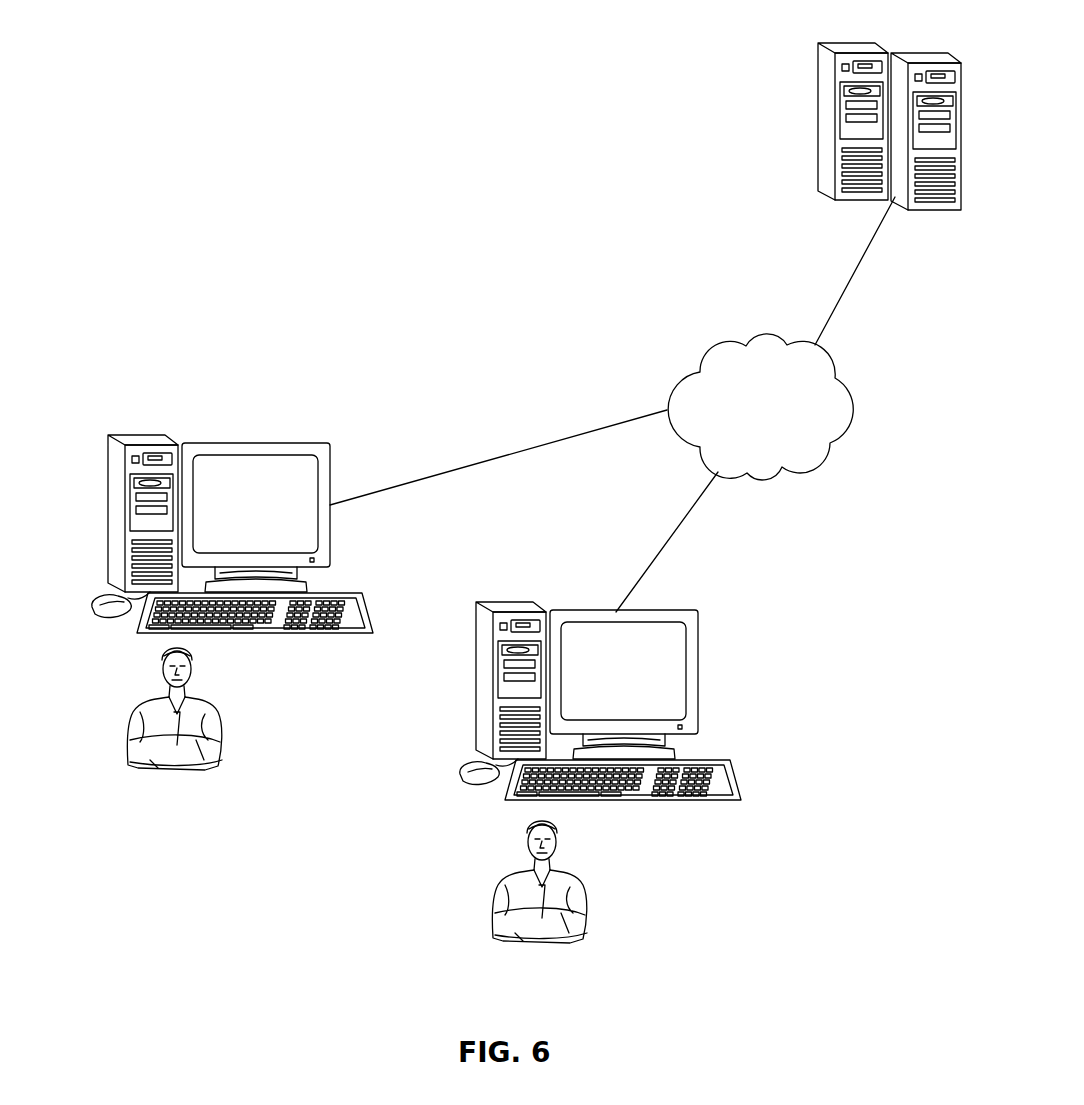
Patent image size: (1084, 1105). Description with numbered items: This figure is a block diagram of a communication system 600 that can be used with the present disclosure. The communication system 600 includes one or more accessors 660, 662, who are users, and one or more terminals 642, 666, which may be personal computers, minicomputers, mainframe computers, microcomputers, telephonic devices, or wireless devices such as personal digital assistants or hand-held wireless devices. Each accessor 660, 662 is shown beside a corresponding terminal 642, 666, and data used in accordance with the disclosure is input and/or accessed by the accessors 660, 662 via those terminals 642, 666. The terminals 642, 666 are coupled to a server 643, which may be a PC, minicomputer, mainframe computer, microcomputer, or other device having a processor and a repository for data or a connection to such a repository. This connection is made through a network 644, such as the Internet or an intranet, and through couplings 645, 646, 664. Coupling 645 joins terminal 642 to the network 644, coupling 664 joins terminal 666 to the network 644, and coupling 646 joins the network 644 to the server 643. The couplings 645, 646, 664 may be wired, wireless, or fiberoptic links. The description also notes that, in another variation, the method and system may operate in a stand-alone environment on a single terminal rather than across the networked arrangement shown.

The communication system 600 is at (137, 54).
The terminal 642 is at (155, 433).
The server 643 is at (850, 40).
The network 644 is at (722, 348).
The coupling 645 is at (462, 457).
The coupling 646 is at (855, 277).
The accessor 660 is at (127, 718).
The accessor 662 is at (588, 893).
The coupling 664 is at (688, 512).
The terminal 666 is at (700, 663).